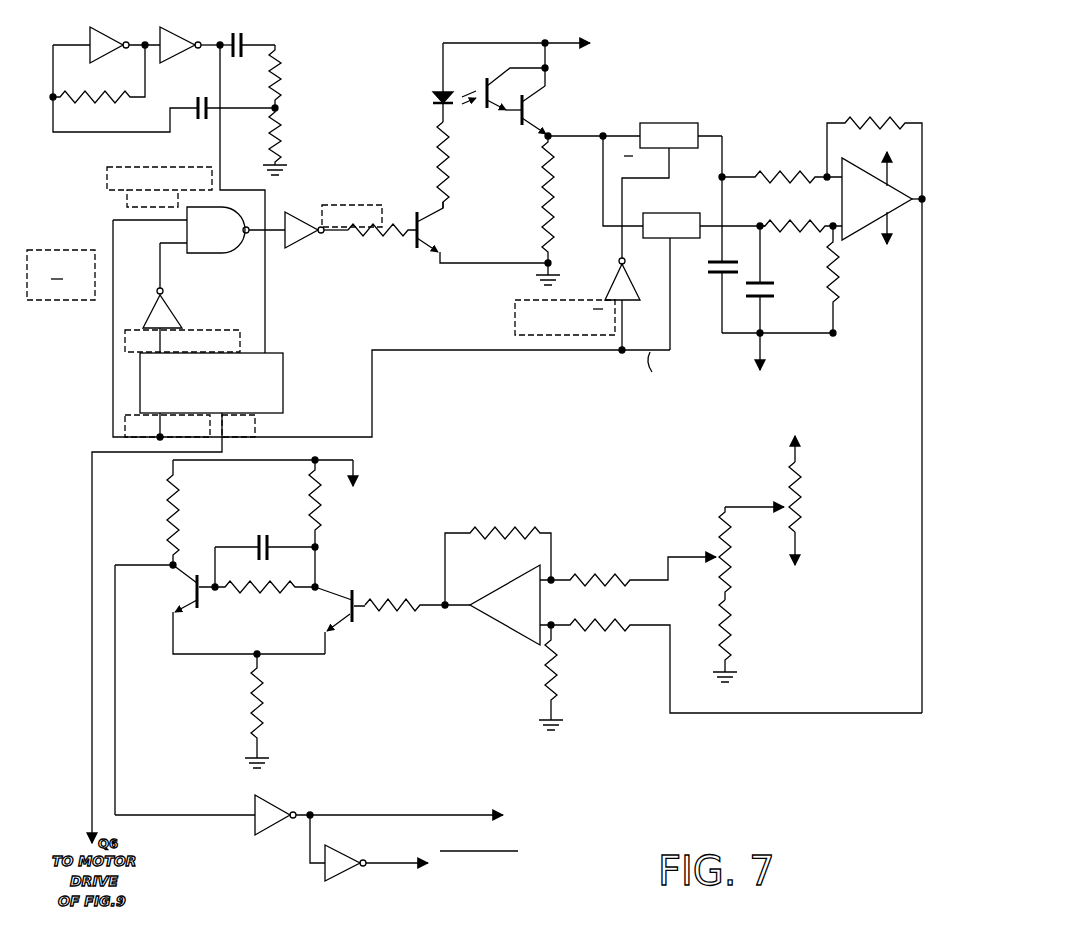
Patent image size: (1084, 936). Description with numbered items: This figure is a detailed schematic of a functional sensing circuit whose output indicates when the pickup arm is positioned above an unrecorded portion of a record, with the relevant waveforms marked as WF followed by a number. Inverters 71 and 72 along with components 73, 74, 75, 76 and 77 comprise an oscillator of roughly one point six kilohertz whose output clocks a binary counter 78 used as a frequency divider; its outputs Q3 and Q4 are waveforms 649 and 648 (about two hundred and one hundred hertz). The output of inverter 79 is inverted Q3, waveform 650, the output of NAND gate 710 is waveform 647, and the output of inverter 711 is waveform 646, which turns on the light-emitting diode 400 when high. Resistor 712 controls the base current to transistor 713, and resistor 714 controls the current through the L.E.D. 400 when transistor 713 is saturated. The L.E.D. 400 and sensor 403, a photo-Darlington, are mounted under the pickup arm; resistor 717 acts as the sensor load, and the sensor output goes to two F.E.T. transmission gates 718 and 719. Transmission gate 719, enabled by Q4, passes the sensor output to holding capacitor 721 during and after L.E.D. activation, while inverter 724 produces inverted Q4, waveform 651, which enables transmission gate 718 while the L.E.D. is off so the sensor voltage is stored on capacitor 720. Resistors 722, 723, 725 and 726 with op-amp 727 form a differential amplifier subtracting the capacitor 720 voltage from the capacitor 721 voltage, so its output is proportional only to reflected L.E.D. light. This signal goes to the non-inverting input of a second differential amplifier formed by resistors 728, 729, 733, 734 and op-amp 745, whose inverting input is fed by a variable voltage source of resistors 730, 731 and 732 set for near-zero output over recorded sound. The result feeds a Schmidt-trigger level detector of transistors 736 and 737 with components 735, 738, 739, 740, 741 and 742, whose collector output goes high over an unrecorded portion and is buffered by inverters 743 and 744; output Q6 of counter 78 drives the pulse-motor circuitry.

The inverter 71 is at (92, 40).
The inverter 72 is at (188, 38).
The oscillator component 73 is at (244, 38).
The oscillator component 74 is at (282, 88).
The oscillator component 75 is at (282, 138).
The oscillator component 76 is at (202, 124).
The oscillator component 77 is at (72, 106).
The binary counter 78 is at (283, 353).
The inverter 79 is at (172, 308).
The NAND gate 710 is at (233, 253).
The inverter 711 is at (308, 196).
The resistor 712 is at (400, 238).
The transistor 713 is at (430, 228).
The resistor 714 is at (448, 168).
The resistor 717 is at (546, 178).
The transmission gate 718 is at (672, 123).
The transmission gate 719 is at (684, 213).
The capacitor 720 is at (708, 270).
The holding capacitor 721 is at (776, 290).
The resistor 722 is at (790, 158).
The resistor 723 is at (786, 232).
The inverter 724 is at (634, 300).
The resistor 725 is at (838, 296).
The resistor 726 is at (887, 102).
The op-amp 727 is at (875, 238).
The resistor 728 is at (610, 632).
The resistor 729 is at (612, 556).
The resistor 730 is at (732, 630).
The resistor 731 is at (730, 556).
The resistor 732 is at (803, 510).
The resistor 733 is at (546, 694).
The resistor 734 is at (500, 528).
The Schmidt-trigger component 735 is at (398, 584).
The transistor 736 is at (342, 632).
The transistor 737 is at (178, 592).
The Schmidt-trigger component 738 is at (255, 598).
The Schmidt-trigger component 739 is at (262, 534).
The Schmidt-trigger component 740 is at (168, 504).
The Schmidt-trigger component 741 is at (320, 506).
The Schmidt-trigger component 742 is at (252, 714).
The inverter 743 is at (266, 830).
The inverter 744 is at (340, 870).
The op-amp 745 is at (515, 640).
The light-emitting diode 400 is at (440, 94).
The sensor 403 is at (535, 112).
The waveform 646 is at (330, 230).
The waveform 647 is at (243, 227).
The waveform 648 is at (190, 426).
The waveform 649 is at (182, 341).
The waveform 650 is at (160, 258).
The waveform 651 is at (618, 262).